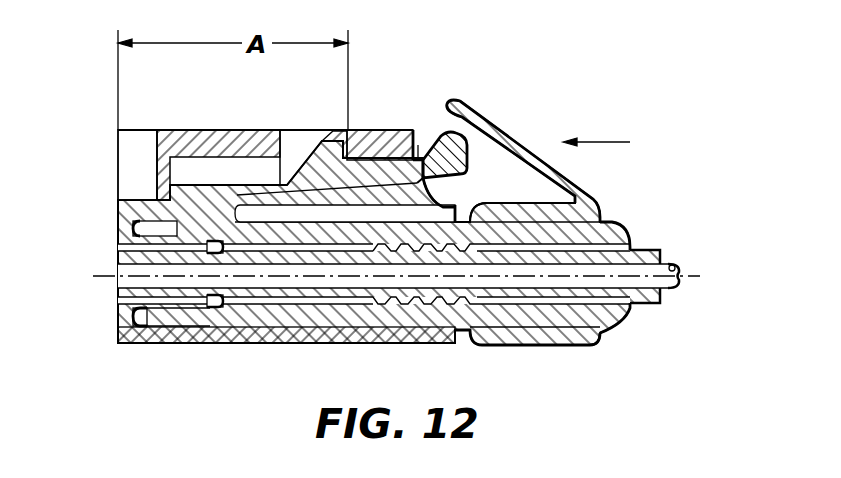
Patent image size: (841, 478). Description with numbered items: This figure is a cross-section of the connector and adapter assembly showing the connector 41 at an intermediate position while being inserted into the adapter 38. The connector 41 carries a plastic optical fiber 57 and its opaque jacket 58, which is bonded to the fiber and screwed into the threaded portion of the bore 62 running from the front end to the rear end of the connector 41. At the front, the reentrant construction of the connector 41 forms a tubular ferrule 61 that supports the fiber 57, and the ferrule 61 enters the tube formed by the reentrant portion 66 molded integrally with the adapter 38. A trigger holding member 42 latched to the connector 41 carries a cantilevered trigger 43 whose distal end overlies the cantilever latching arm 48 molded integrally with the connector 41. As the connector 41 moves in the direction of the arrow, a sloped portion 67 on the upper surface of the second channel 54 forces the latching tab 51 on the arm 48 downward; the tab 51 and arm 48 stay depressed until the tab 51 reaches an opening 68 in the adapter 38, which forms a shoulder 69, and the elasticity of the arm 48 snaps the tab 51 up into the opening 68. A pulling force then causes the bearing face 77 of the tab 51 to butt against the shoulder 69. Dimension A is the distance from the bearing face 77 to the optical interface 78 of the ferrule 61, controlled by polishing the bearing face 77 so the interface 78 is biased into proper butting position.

The adapter member 38 is at (200, 130).
The connector member 41 is at (627, 327).
The trigger holding member 42 is at (523, 347).
The cantilevered trigger 43 is at (512, 117).
The cantilever latching arm 48 is at (468, 160).
The latching tab 51 is at (330, 138).
The second channel 54 is at (432, 155).
The plastic optical fiber 57 is at (667, 292).
The opaque jacket 58 is at (643, 249).
The tubular ferrule 61 is at (130, 290).
The bore 62 is at (266, 282).
The reentrant portion 66 is at (137, 243).
The sloped portion 67 is at (417, 157).
The opening 68 is at (292, 137).
The shoulder 69 is at (345, 147).
The bearing face 77 is at (373, 131).
The optical interface 78 is at (133, 312).